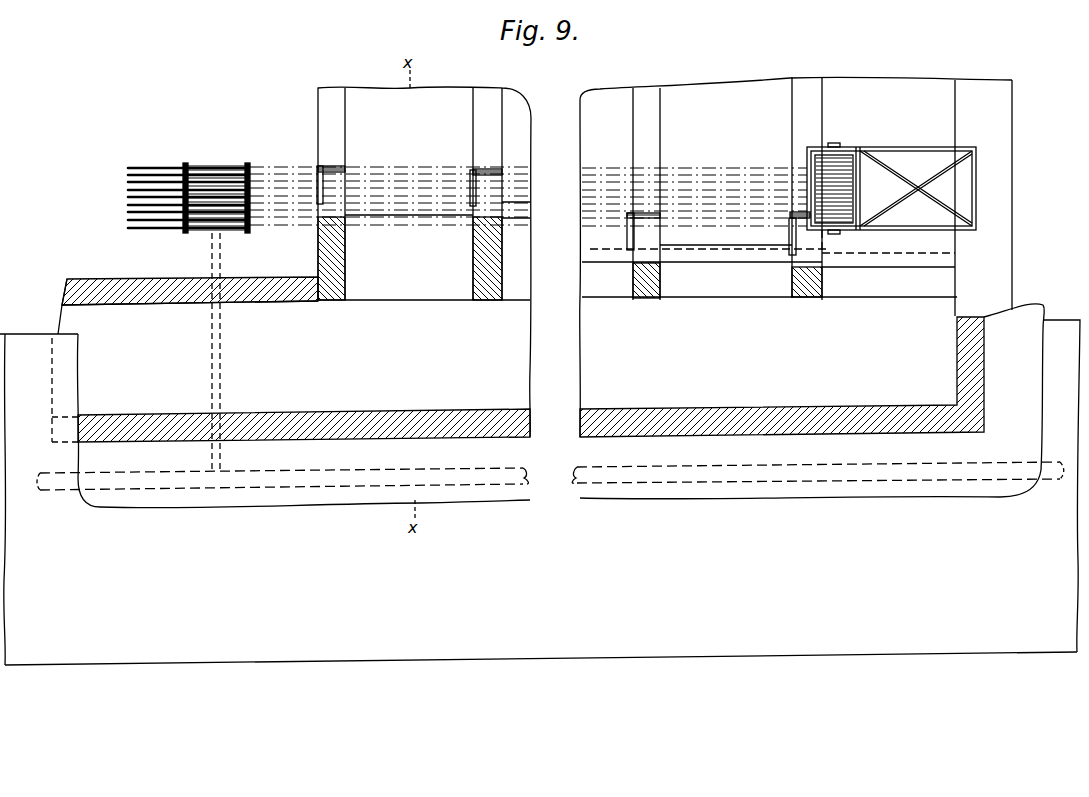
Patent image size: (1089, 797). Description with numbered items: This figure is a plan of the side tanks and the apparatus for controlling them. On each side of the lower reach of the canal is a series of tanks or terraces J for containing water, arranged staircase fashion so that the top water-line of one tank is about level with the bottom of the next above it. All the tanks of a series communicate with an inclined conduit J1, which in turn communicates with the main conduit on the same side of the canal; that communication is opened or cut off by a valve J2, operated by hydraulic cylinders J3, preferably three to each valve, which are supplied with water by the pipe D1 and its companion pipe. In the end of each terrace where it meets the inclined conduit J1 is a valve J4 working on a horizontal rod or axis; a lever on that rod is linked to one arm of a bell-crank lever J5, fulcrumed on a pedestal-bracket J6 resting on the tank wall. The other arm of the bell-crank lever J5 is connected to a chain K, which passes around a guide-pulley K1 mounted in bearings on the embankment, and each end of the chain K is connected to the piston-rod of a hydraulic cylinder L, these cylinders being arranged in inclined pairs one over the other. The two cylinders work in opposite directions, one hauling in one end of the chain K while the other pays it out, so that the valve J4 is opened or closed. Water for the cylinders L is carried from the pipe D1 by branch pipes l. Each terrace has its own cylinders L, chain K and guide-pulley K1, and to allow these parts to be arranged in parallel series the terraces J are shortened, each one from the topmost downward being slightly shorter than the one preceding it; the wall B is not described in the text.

The tanks or terraces J is at (586, 134).
The inclined conduit J1 is at (592, 349).
The valve J2 is at (600, 245).
The hydraulic cylinders J3 is at (480, 192).
The valve J4 is at (878, 253).
The bell-crank lever J5 is at (797, 230).
The pedestal-bracket J6 is at (488, 169).
The chain K is at (284, 225).
The guide-pulley K1 is at (858, 190).
The hydraulic cylinder L is at (214, 166).
The branch pipes l is at (222, 353).
The wall / support B is at (1012, 134).
The pipe D1 is at (538, 473).